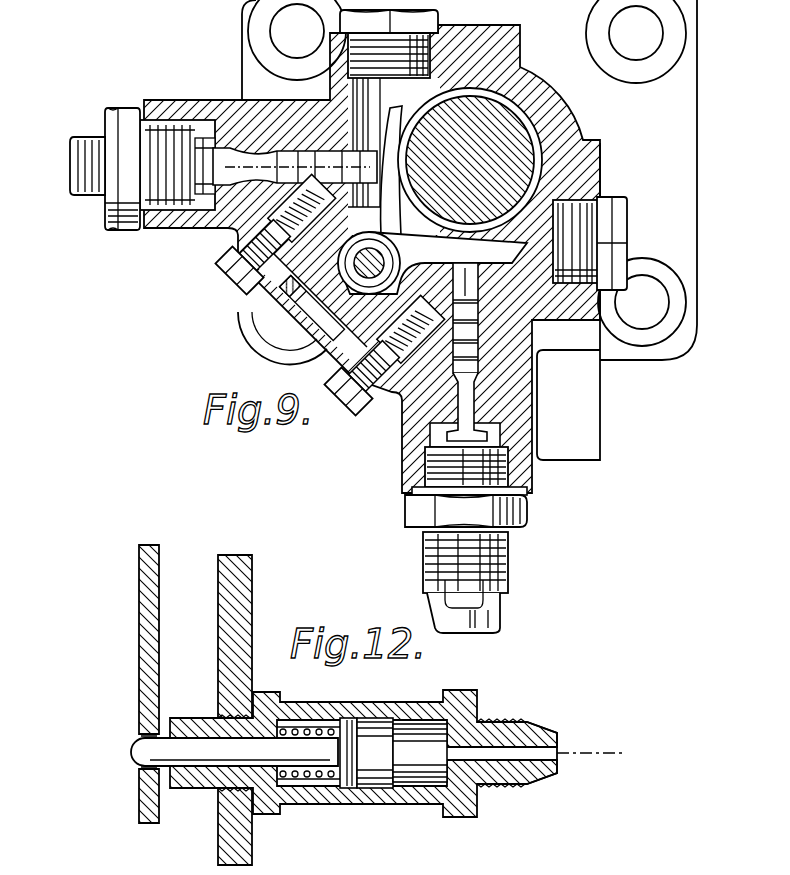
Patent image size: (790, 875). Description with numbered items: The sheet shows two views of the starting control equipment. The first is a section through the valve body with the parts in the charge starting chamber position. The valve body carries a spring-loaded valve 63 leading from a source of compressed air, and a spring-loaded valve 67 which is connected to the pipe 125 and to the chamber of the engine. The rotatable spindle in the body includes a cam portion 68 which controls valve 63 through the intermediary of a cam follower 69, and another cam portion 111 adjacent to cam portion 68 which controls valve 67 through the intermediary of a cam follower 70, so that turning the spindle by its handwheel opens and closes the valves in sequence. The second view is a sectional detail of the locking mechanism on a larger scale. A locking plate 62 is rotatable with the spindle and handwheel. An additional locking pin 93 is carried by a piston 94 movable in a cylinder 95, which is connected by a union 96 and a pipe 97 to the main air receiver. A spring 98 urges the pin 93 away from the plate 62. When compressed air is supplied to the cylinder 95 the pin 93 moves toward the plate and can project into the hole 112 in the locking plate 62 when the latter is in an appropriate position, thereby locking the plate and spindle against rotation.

In FIG. 9, the spring-loaded valve 63 is at (497, 431).
In FIG. 9, the spring-loaded valve 67 is at (219, 212).
In FIG. 9, the cam portion 68 is at (515, 148).
In FIG. 9, the cam follower 69 is at (502, 260).
In FIG. 9, the cam follower 70 is at (391, 122).
In FIG. 9, the cam portion 111 is at (445, 233).
In FIG. 9, the pipe 125 is at (70, 163).
In FIG. 12, the locking plate 62 is at (148, 607).
In FIG. 12, the locking pin 93 is at (136, 760).
In FIG. 12, the piston 94 is at (347, 718).
In FIG. 12, the cylinder 95 is at (378, 800).
In FIG. 12, the union 96 is at (529, 748).
In FIG. 12, the pipe 97 is at (593, 753).
In FIG. 12, the spring 98 is at (326, 781).
In FIG. 12, the hole 112 is at (140, 733).